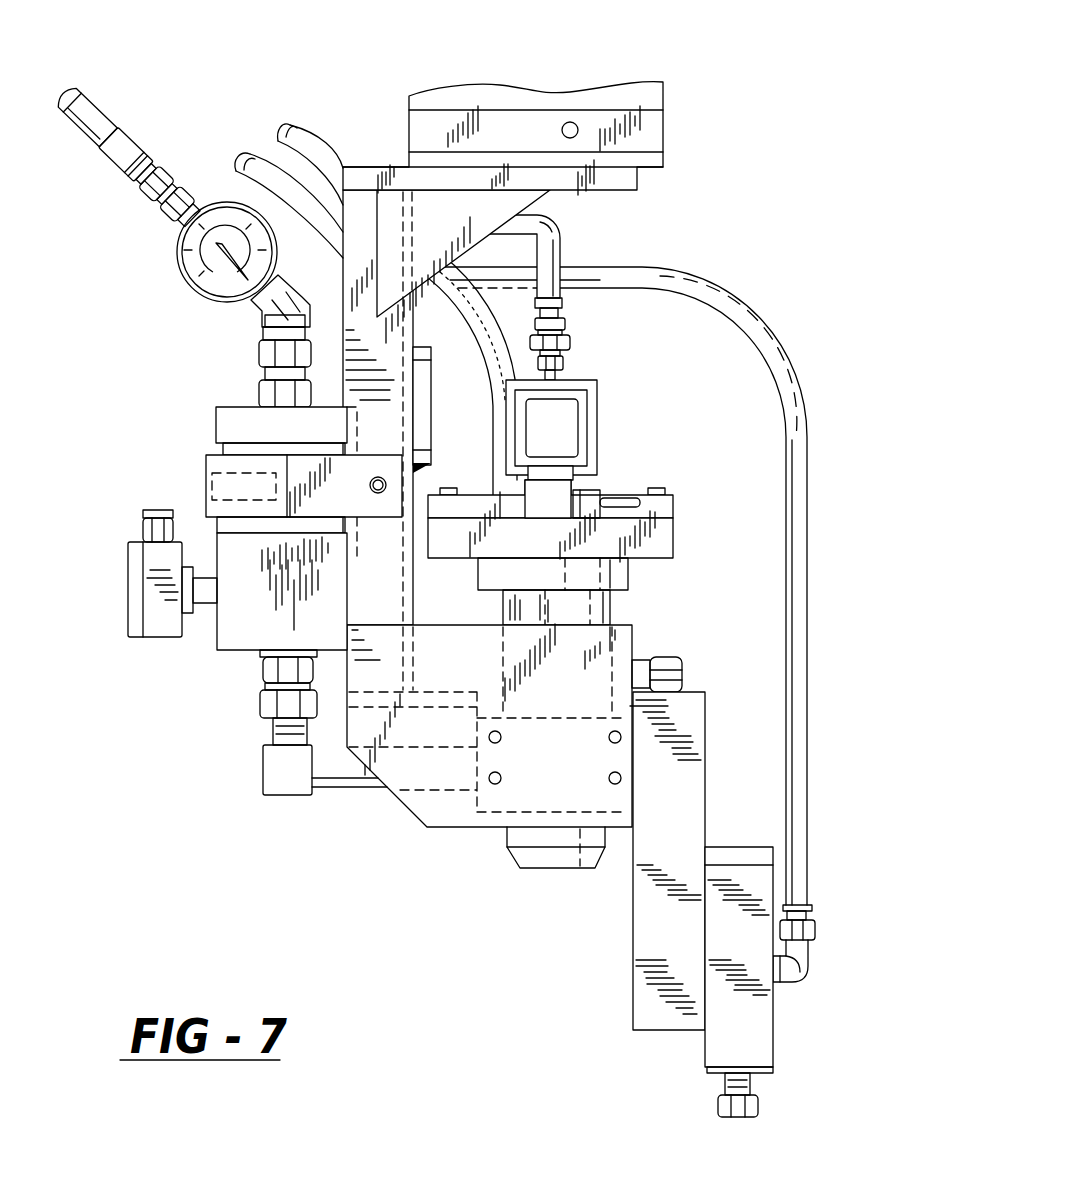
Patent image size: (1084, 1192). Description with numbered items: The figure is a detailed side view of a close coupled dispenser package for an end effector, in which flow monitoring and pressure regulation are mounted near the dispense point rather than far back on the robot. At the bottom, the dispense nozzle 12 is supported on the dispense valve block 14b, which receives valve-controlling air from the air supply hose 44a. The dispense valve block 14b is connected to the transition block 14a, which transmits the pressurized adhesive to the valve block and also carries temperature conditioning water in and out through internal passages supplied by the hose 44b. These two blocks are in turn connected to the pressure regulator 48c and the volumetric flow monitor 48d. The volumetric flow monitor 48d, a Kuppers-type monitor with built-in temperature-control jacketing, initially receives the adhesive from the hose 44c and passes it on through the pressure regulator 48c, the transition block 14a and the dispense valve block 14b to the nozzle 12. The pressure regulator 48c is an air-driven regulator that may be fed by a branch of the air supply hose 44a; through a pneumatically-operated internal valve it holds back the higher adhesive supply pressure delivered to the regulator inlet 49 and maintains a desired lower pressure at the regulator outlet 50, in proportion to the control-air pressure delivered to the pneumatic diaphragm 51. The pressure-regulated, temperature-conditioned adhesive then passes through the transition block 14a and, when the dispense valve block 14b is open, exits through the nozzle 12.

The dispense nozzle 12 is at (745, 1117).
The transition block 14a is at (640, 985).
The dispense valve block 14b is at (708, 1052).
The air supply hose 44a is at (548, 237).
The hose 44b is at (502, 330).
The hose 44c is at (107, 117).
The pressure regulator 48c is at (430, 827).
The volumetric flow monitor 48d is at (224, 640).
The regulator inlet 49 is at (486, 772).
The regulator outlet 50 is at (640, 787).
The pneumatic diaphragm 51 is at (680, 531).